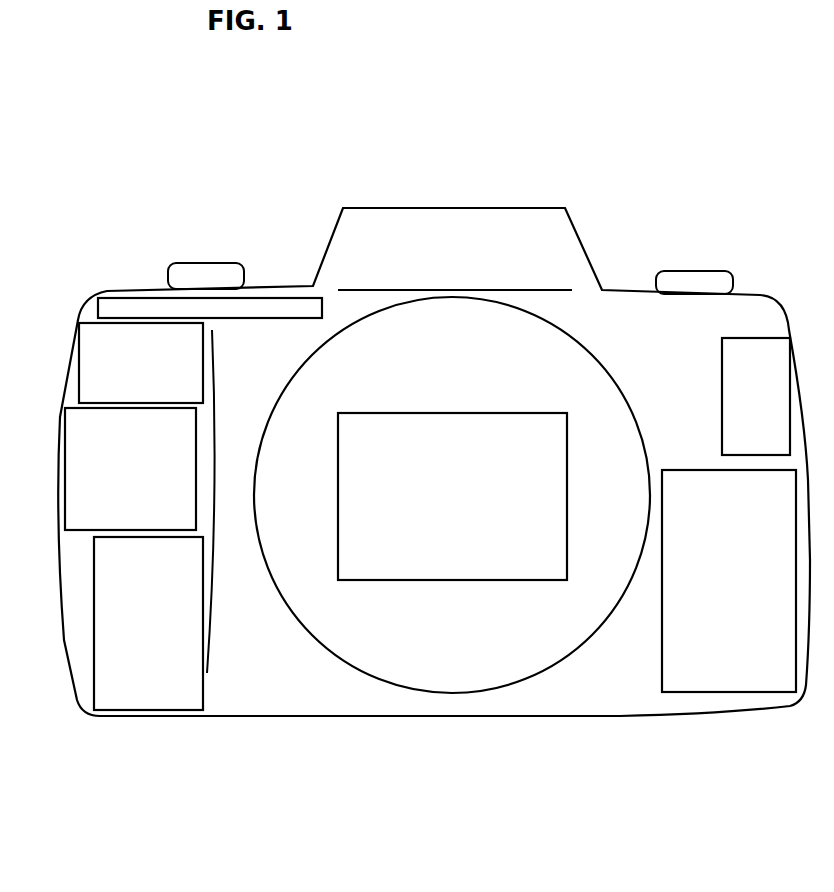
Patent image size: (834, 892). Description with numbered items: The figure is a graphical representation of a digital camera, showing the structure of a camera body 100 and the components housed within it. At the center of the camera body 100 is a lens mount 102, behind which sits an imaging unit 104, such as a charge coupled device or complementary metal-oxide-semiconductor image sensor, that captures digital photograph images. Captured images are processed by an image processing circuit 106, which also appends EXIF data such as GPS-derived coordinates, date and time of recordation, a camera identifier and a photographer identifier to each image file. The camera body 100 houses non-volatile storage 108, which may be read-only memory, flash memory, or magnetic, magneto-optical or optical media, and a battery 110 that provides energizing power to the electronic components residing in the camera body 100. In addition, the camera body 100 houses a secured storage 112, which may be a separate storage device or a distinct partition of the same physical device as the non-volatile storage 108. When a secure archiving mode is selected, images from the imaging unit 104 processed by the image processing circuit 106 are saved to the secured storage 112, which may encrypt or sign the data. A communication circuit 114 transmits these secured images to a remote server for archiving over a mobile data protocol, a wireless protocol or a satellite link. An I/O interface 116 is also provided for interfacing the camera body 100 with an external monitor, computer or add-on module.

The camera body 100 is at (452, 175).
The lens mount 102 is at (495, 692).
The imaging unit 104 is at (452, 496).
The image processing circuit 106 is at (729, 581).
The non-volatile storage 108 is at (130, 469).
The battery 110 is at (148, 623).
The secured storage 112 is at (141, 363).
The communication circuit 114 is at (117, 304).
The I/O interface 116 is at (756, 396).